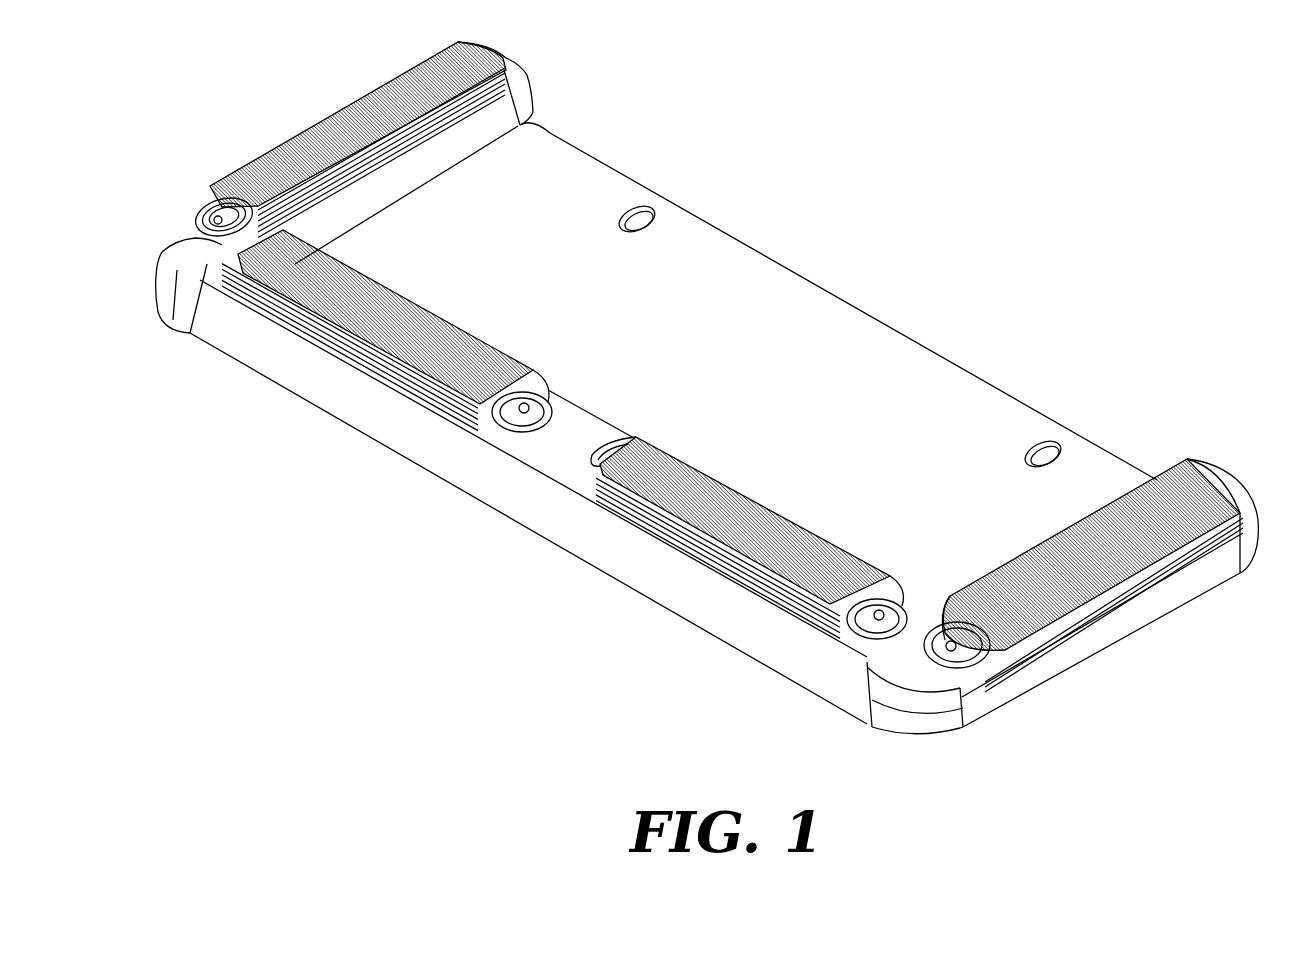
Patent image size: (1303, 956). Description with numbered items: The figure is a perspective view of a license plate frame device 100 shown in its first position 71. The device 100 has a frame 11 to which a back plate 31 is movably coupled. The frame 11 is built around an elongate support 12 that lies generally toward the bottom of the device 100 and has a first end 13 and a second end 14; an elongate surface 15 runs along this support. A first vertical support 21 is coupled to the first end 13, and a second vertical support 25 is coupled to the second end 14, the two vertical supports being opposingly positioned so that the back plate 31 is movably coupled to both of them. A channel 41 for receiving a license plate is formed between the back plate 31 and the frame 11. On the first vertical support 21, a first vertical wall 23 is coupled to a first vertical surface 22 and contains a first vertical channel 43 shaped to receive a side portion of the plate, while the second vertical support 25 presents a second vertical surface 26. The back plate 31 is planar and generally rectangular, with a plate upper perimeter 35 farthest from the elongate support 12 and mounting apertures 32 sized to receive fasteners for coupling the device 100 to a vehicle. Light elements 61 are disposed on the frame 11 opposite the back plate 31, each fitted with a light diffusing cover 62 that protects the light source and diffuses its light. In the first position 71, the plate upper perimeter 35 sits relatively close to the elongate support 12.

The license plate frame device 100 is at (818, 135).
The frame 11 is at (937, 733).
The elongate support 12 is at (557, 483).
The first end 13 is at (193, 322).
The second end 14 is at (867, 657).
The elongate surface 15 is at (569, 448).
The first vertical support 21 is at (378, 162).
The first vertical surface 22 is at (196, 258).
The first vertical wall 23 is at (447, 148).
The second vertical support 25 is at (1143, 592).
The second vertical surface 26 is at (918, 662).
The back plate 31 is at (838, 314).
The mounting aperture 32 is at (631, 231).
The plate upper perimeter 35 is at (783, 257).
The channel 41 is at (444, 180).
The first vertical channel 43 is at (353, 225).
The light element 61 is at (725, 346).
The light diffusing cover 62 is at (332, 120).
The first position 71 is at (929, 329).